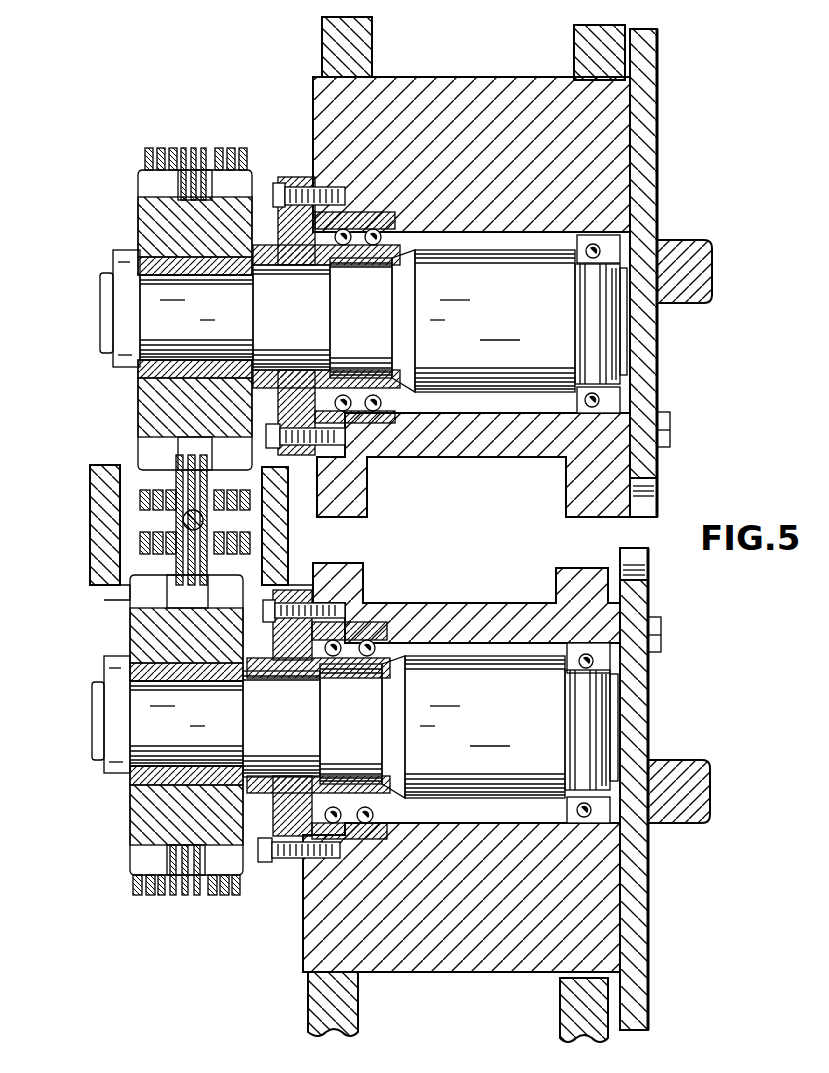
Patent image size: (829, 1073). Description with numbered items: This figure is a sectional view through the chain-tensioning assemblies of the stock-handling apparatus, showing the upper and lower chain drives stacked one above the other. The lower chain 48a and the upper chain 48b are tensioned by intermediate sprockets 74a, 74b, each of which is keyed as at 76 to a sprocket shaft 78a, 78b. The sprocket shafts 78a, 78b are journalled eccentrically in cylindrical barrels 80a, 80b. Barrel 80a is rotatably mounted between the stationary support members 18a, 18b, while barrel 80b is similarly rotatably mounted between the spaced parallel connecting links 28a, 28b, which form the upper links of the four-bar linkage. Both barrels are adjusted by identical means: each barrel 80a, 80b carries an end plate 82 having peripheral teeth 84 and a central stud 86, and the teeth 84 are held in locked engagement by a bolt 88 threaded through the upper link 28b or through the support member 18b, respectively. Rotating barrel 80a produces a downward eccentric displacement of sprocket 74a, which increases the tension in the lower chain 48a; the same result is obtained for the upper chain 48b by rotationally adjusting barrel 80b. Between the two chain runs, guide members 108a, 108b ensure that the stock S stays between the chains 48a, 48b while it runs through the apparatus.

The support member 18a is at (346, 1019).
The support member 18b is at (565, 1020).
The connecting link 28a is at (364, 40).
The connecting link 28b is at (580, 35).
The lower chain 48a is at (113, 530).
The upper chain 48b is at (138, 495).
The stock S is at (183, 522).
The intermediate sprocket 74a is at (137, 833).
The intermediate sprocket 74b is at (150, 402).
The key 76 is at (150, 258).
The sprocket shaft 78a is at (145, 745).
The sprocket shaft 78b is at (155, 340).
The cylindrical barrel 80a is at (316, 907).
The cylindrical barrel 80b is at (617, 142).
The end plate 82 is at (648, 170).
The peripheral teeth 84 is at (650, 492).
The central stud 86 is at (697, 263).
The bolt 88 is at (668, 428).
The guide member 108a is at (100, 548).
The guide member 108b is at (277, 516).